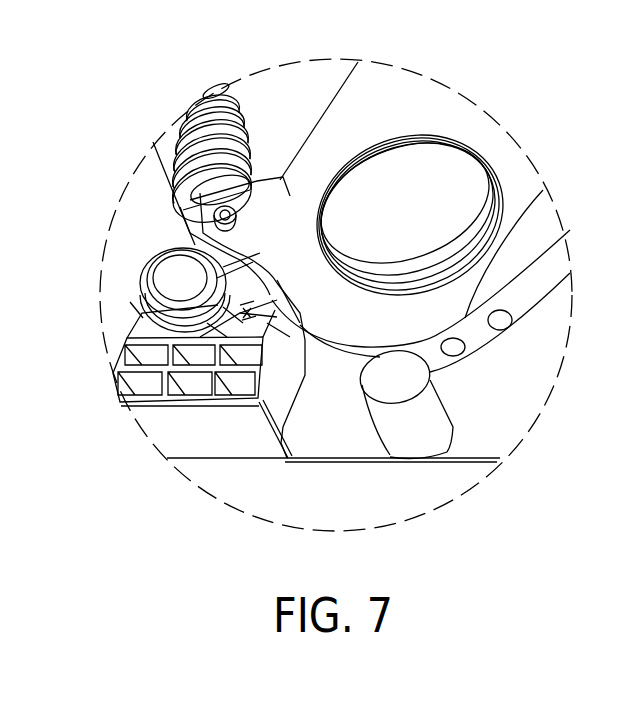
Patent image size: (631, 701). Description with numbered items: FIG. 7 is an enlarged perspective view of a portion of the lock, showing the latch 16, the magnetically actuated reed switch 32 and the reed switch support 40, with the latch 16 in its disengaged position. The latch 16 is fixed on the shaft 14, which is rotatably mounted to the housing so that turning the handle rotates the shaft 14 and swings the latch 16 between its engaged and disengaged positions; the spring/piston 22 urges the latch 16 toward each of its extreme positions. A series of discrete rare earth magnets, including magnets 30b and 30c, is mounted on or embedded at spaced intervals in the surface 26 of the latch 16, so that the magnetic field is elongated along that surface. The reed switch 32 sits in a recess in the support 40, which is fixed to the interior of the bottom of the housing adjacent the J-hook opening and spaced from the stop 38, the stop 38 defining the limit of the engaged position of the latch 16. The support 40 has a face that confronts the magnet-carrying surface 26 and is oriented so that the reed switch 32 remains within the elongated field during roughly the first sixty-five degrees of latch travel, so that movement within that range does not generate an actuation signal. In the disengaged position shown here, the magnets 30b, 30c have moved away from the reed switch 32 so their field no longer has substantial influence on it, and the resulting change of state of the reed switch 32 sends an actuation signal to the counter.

The shaft 14 is at (422, 178).
The latch 16 is at (372, 90).
The spring/piston 22 is at (250, 112).
The surface of latch 26 is at (346, 351).
The magnet 30b is at (463, 328).
The magnet 30c is at (500, 323).
The reed switch 32 is at (232, 323).
The stop 38 is at (432, 418).
The reed switch support 40 is at (178, 370).